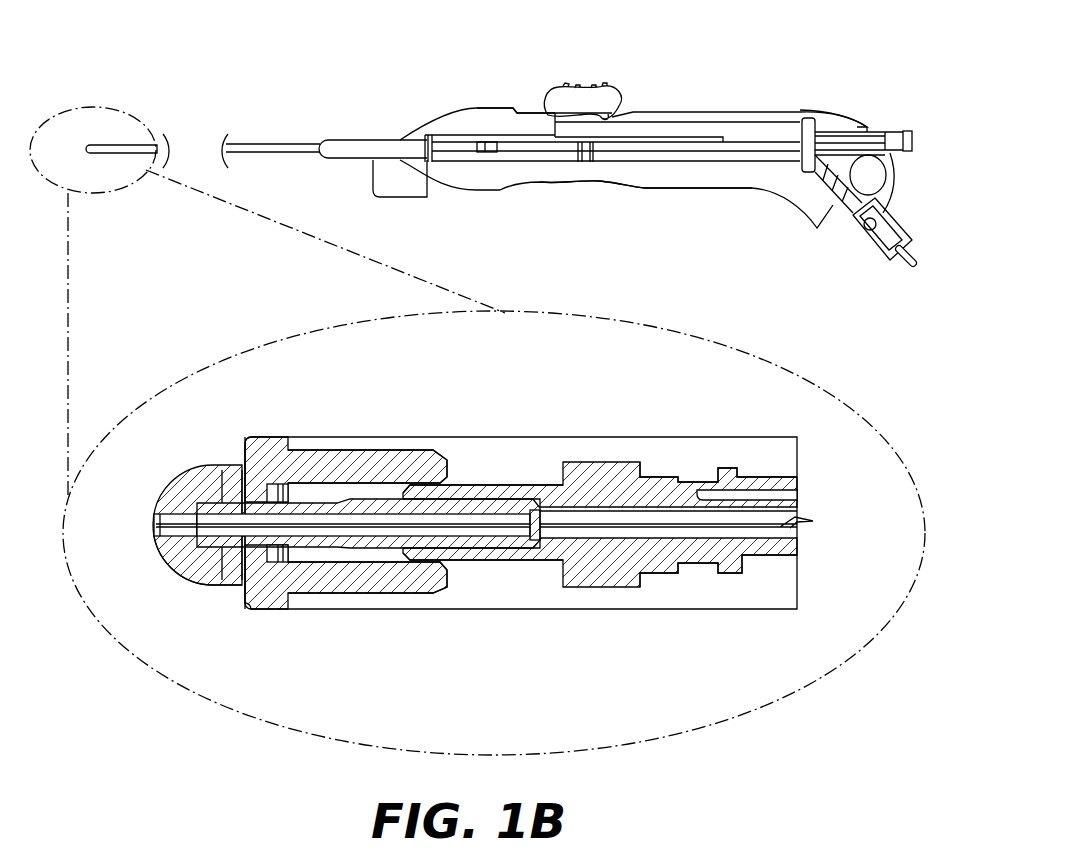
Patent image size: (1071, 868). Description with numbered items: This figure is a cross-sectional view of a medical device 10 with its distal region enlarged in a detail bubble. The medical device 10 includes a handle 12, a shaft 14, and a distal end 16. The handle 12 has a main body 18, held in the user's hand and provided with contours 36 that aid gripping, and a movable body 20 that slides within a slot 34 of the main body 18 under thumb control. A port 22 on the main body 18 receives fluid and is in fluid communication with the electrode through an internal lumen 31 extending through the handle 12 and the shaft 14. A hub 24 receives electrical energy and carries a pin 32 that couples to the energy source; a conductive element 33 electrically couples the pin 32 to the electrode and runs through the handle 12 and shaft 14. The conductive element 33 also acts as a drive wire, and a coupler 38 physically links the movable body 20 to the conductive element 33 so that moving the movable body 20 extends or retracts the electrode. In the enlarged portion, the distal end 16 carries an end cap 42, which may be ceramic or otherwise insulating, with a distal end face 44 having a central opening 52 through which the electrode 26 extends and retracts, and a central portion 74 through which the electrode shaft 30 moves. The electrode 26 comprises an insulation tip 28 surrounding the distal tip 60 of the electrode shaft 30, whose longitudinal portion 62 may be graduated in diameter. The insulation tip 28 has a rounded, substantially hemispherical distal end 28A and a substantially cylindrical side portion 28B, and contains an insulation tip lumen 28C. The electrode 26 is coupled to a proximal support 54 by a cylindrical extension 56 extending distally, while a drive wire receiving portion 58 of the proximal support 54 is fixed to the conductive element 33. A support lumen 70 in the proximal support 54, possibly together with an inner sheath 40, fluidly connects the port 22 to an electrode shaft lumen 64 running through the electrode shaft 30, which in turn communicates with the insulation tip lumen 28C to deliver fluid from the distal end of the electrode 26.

The medical device 10 is at (150, 54).
The handle 12 is at (746, 240).
The shaft 14 is at (270, 142).
The distal end 16 is at (134, 170).
The main body 18 is at (783, 110).
The movable body 20 is at (624, 90).
The port 22 is at (905, 130).
The hub 24 is at (897, 232).
The electrode 26 is at (84, 164).
The insulation tip 28 is at (165, 584).
The distal end 28A is at (160, 545).
The side portion 28B is at (217, 588).
The insulation tip lumen 28C is at (160, 520).
The electrode shaft 30 is at (397, 556).
The internal lumen 31 is at (463, 165).
The pin 32 is at (913, 250).
The conductive element 33 is at (538, 152).
The slot 34 is at (530, 96).
The contours 36 is at (645, 189).
The coupler 38 is at (702, 103).
The inner sheath 40 is at (679, 462).
The end cap 42 is at (288, 447).
The distal end face 44 is at (246, 440).
The central opening 52 is at (288, 594).
The proximal support 54 is at (578, 462).
The cylindrical extension 56 is at (491, 486).
The drive wire receiving portion 58 is at (748, 490).
The distal tip 60 is at (226, 500).
The longitudinal portion 62 is at (318, 497).
The electrode shaft lumen 64 is at (456, 522).
The support lumen 70 is at (617, 540).
The central portion 74 is at (358, 563).